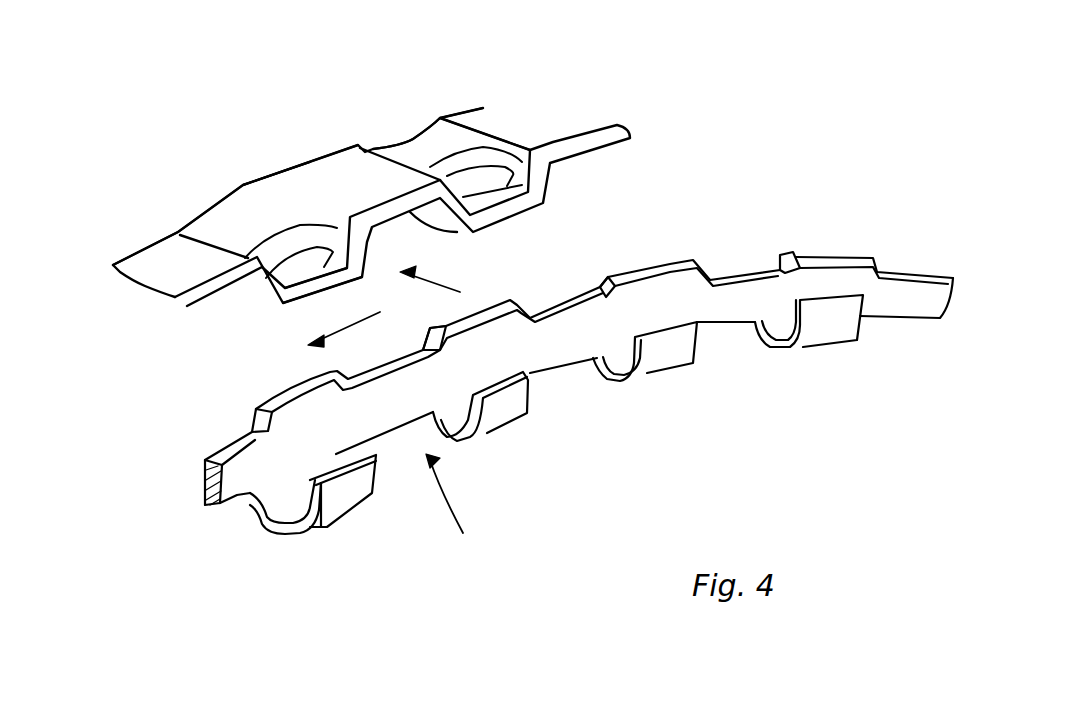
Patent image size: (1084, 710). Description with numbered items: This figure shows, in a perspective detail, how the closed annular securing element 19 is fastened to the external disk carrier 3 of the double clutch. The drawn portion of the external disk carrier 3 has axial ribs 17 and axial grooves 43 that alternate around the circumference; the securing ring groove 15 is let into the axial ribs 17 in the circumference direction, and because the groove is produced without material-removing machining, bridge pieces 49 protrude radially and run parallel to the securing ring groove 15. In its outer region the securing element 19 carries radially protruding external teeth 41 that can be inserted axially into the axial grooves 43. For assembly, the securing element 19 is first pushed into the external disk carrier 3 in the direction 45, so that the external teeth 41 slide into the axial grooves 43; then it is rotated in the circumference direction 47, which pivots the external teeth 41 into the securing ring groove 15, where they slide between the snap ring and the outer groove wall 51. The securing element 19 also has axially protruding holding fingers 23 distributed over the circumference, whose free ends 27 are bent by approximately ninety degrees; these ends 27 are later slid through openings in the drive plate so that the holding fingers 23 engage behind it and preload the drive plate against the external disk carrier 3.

The external disk carrier 3 is at (556, 120).
The securing ring groove 15 is at (237, 297).
The axial ribs 17 is at (203, 226).
The securing element 19 is at (563, 348).
The holding fingers 23 is at (290, 535).
The free ends 27 is at (343, 492).
The external teeth 41 is at (655, 268).
The axial grooves 43 is at (307, 187).
The direction 45 is at (435, 278).
The circumference direction 47 is at (350, 325).
The bridge pieces 49 is at (263, 237).
The outer groove wall 51 is at (244, 303).